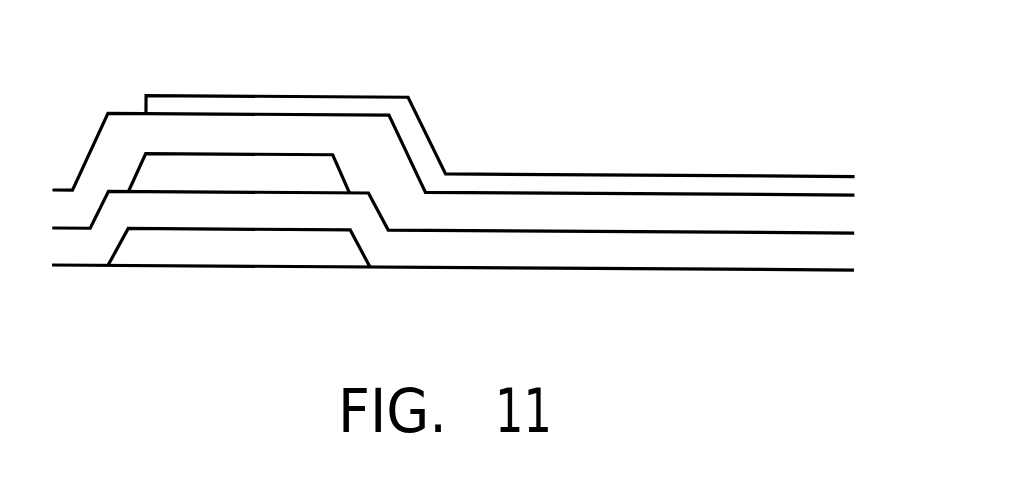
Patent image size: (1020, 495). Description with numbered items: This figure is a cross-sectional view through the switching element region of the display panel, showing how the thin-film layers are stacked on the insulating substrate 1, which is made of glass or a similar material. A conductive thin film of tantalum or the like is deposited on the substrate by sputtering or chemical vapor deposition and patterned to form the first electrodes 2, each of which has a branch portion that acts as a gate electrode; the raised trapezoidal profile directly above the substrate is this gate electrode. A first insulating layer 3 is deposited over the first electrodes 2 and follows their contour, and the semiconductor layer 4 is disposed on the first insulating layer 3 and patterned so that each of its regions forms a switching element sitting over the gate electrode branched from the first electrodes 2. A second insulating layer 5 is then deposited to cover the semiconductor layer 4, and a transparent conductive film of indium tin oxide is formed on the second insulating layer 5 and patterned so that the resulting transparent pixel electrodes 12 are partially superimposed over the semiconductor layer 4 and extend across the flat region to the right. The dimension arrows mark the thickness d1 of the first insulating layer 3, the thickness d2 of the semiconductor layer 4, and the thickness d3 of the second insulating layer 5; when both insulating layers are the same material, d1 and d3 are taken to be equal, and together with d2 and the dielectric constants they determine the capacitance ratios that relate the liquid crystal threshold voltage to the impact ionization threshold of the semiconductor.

The insulating substrate 1 is at (453, 289).
The first electrodes 2 is at (239, 247).
The first insulating layer 3 is at (453, 212).
The semiconductor layer 4 is at (238, 172).
The second insulating layer 5 is at (453, 170).
The transparent pixel electrodes 12 is at (767, 160).
The thickness of the first insulating layer d1 is at (146, 133).
The thickness of the semiconductor layer d2 is at (201, 73).
The thickness of the second insulating layer d3 is at (295, 37).